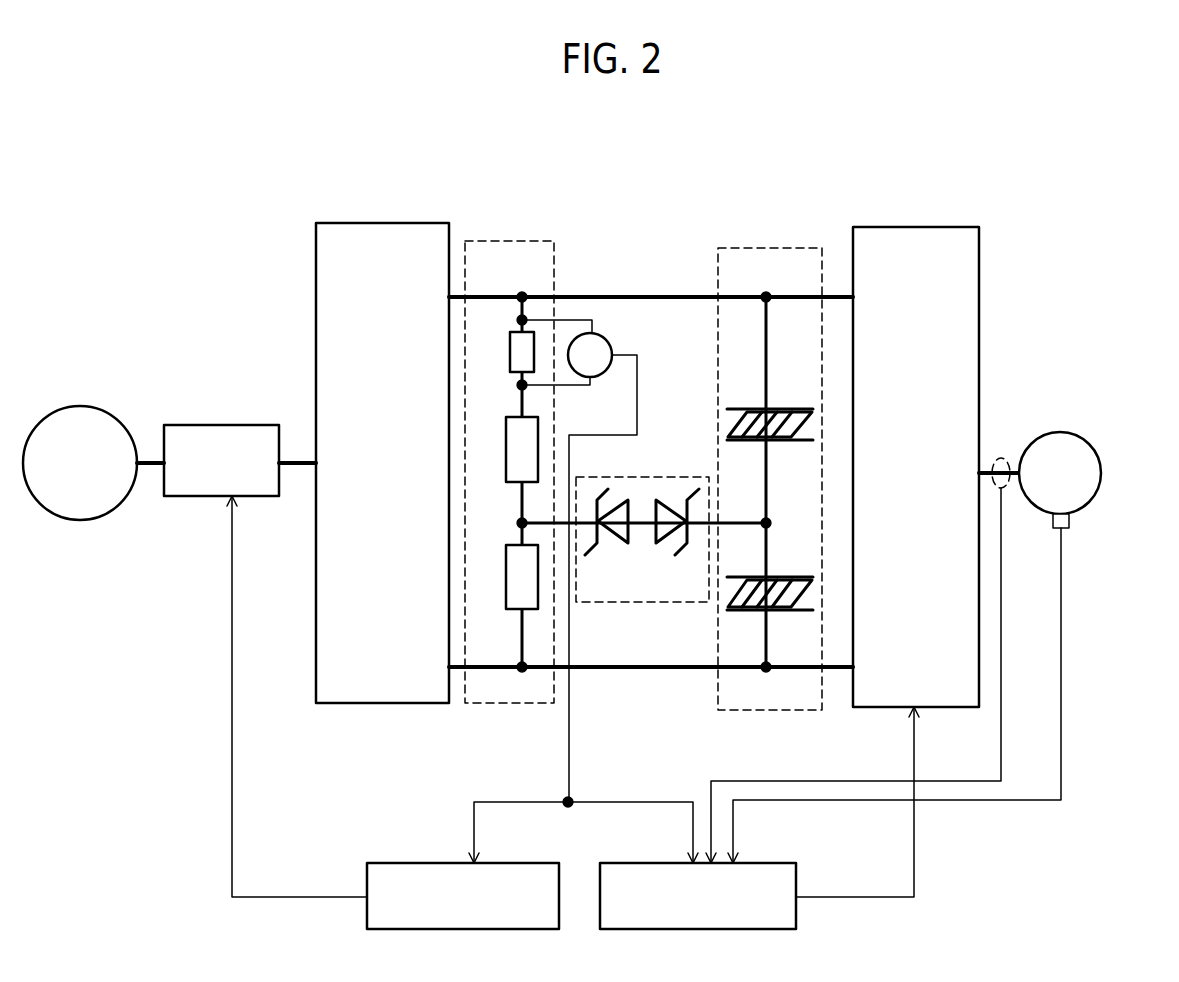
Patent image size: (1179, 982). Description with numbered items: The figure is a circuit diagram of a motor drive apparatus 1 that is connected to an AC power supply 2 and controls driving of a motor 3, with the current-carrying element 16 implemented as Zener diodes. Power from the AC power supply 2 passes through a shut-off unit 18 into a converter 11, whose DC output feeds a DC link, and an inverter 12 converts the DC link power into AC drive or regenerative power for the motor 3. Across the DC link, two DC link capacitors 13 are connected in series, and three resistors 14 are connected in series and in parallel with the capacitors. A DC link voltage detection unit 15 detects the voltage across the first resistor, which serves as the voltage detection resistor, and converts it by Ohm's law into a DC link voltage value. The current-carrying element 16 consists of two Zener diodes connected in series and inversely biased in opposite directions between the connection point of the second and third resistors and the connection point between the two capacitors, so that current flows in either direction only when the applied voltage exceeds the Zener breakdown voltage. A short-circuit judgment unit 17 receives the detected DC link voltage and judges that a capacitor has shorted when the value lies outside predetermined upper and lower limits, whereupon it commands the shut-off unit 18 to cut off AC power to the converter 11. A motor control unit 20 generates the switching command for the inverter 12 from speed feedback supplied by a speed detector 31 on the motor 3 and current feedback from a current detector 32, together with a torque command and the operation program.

The motor drive apparatus 1 is at (674, 162).
The AC power supply 2 is at (90, 406).
The motor 3 is at (1043, 432).
The converter 11 is at (352, 223).
The inverter 12 is at (887, 227).
The DC link capacitors 13 is at (740, 248).
The resistors 14 is at (515, 241).
The DC link voltage detection unit 15 is at (608, 343).
The current-carrying element 16 is at (627, 477).
The short-circuit judgment unit 17 is at (398, 863).
The shut-off unit 18 is at (218, 425).
The motor control unit 20 is at (762, 863).
The speed detector 31 is at (1069, 521).
The current detector 32 is at (1000, 450).